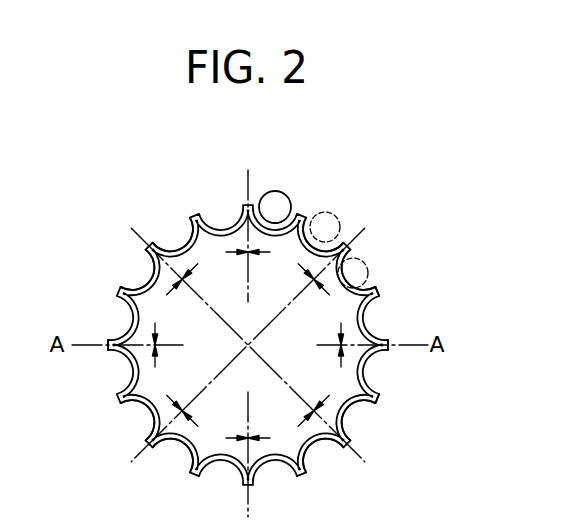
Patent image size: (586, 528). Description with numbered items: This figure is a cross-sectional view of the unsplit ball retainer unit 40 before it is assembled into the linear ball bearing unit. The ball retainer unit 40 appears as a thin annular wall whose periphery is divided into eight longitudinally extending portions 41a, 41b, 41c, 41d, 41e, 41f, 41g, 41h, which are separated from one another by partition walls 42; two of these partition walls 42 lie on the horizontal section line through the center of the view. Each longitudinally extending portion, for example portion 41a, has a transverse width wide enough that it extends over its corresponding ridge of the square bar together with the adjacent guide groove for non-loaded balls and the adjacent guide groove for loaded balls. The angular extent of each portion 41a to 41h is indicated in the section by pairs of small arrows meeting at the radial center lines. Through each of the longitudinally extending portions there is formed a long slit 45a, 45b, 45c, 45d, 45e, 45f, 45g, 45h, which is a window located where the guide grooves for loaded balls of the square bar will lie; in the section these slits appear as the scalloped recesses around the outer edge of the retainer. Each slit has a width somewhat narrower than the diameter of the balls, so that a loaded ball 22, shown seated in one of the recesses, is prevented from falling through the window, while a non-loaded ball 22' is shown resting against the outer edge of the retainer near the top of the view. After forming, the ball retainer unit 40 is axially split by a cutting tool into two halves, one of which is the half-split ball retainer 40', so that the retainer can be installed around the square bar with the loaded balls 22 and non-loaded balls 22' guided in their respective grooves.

The ball retainer unit 40 is at (248, 308).
The half-split ball retainer 40' is at (407, 289).
The loaded ball 22 is at (374, 249).
The non-loaded ball 22' is at (282, 177).
The partition wall 42 is at (390, 339).
The longitudinally extending portion 41a is at (281, 260).
The longitudinally extending portion 41b is at (333, 312).
The longitudinally extending portion 41c is at (331, 378).
The longitudinally extending portion 41d is at (281, 428).
The longitudinally extending portion 41e is at (215, 428).
The longitudinally extending portion 41f is at (163, 378).
The longitudinally extending portion 41g is at (162, 312).
The longitudinally extending portion 41h is at (215, 260).
The long slit 45a is at (320, 233).
The long slit 45b is at (363, 268).
The long slit 45c is at (353, 418).
The long slit 45d is at (333, 465).
The long slit 45e is at (181, 448).
The long slit 45f is at (143, 412).
The long slit 45g is at (148, 268).
The long slit 45h is at (178, 236).